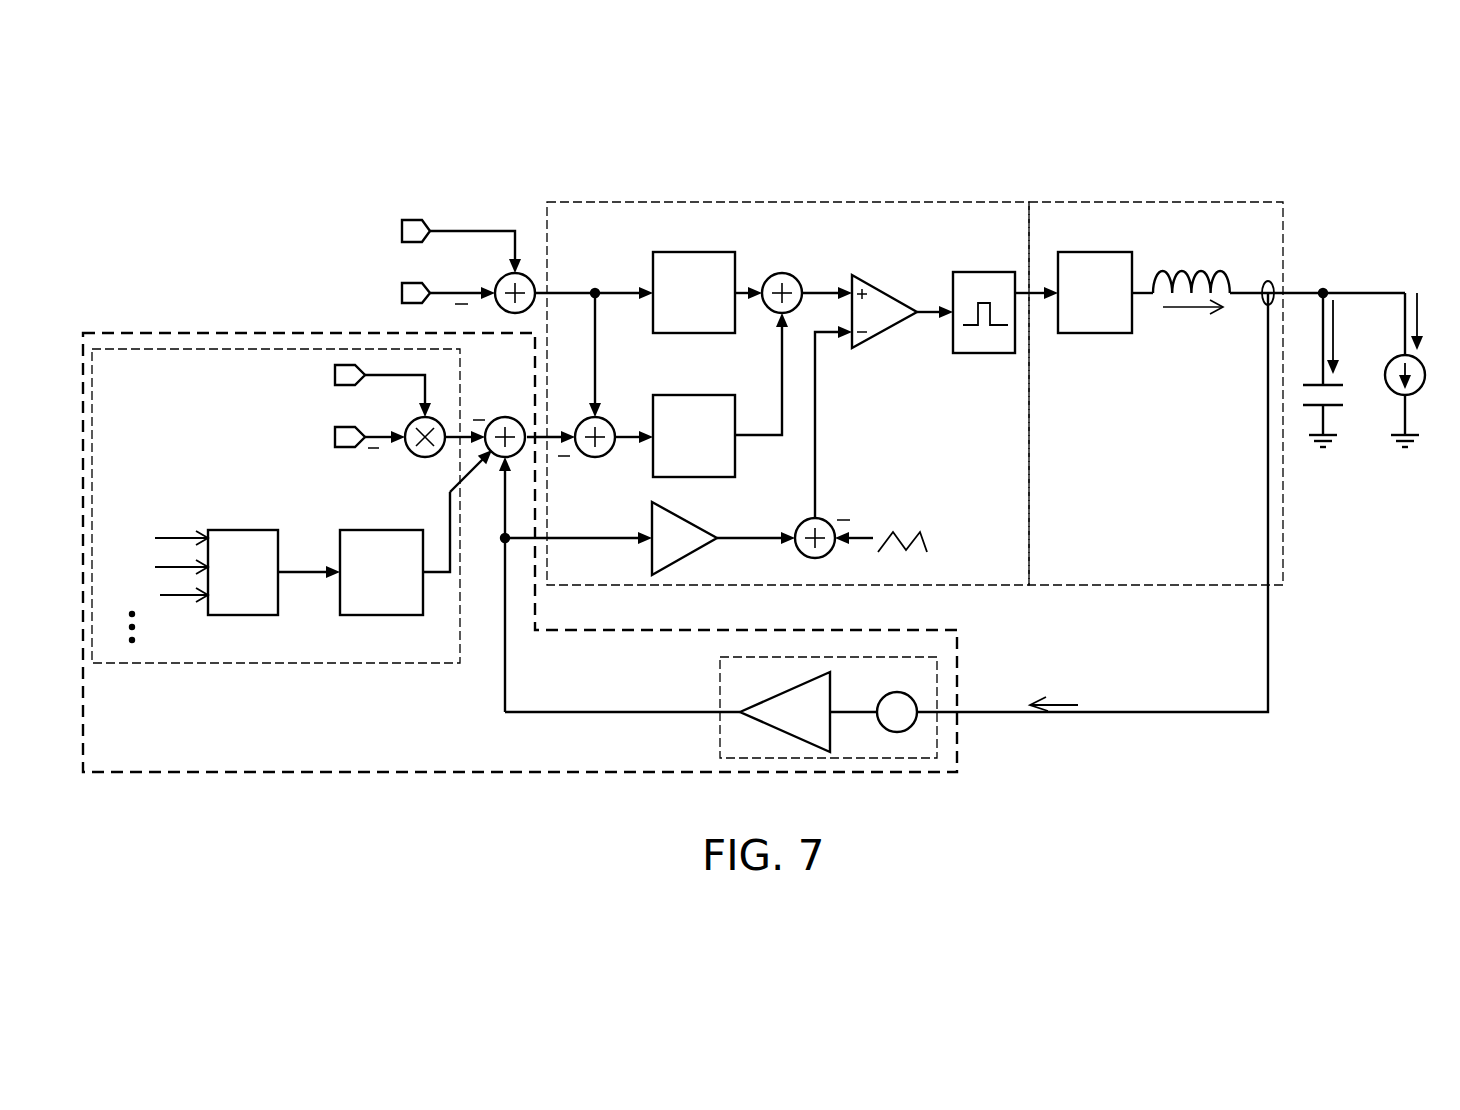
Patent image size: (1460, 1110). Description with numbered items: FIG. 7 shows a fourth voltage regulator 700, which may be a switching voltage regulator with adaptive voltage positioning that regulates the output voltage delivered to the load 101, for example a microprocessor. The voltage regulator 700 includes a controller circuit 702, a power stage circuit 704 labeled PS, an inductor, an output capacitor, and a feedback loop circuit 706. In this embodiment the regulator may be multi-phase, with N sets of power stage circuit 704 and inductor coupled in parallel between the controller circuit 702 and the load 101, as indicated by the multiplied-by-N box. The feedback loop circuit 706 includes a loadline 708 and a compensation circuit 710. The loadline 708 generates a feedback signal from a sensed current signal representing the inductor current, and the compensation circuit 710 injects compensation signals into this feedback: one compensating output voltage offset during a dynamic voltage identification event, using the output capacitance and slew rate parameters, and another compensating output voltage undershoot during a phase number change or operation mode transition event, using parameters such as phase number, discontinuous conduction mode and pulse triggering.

The voltage regulator 700 is at (1250, 112).
The controller circuit 702 is at (928, 201).
The power stage circuit 704 is at (1080, 252).
The feedback loop circuit 706 is at (950, 774).
The loadline 708 is at (887, 760).
The compensation circuit 710 is at (417, 665).
The load 101 is at (1410, 392).